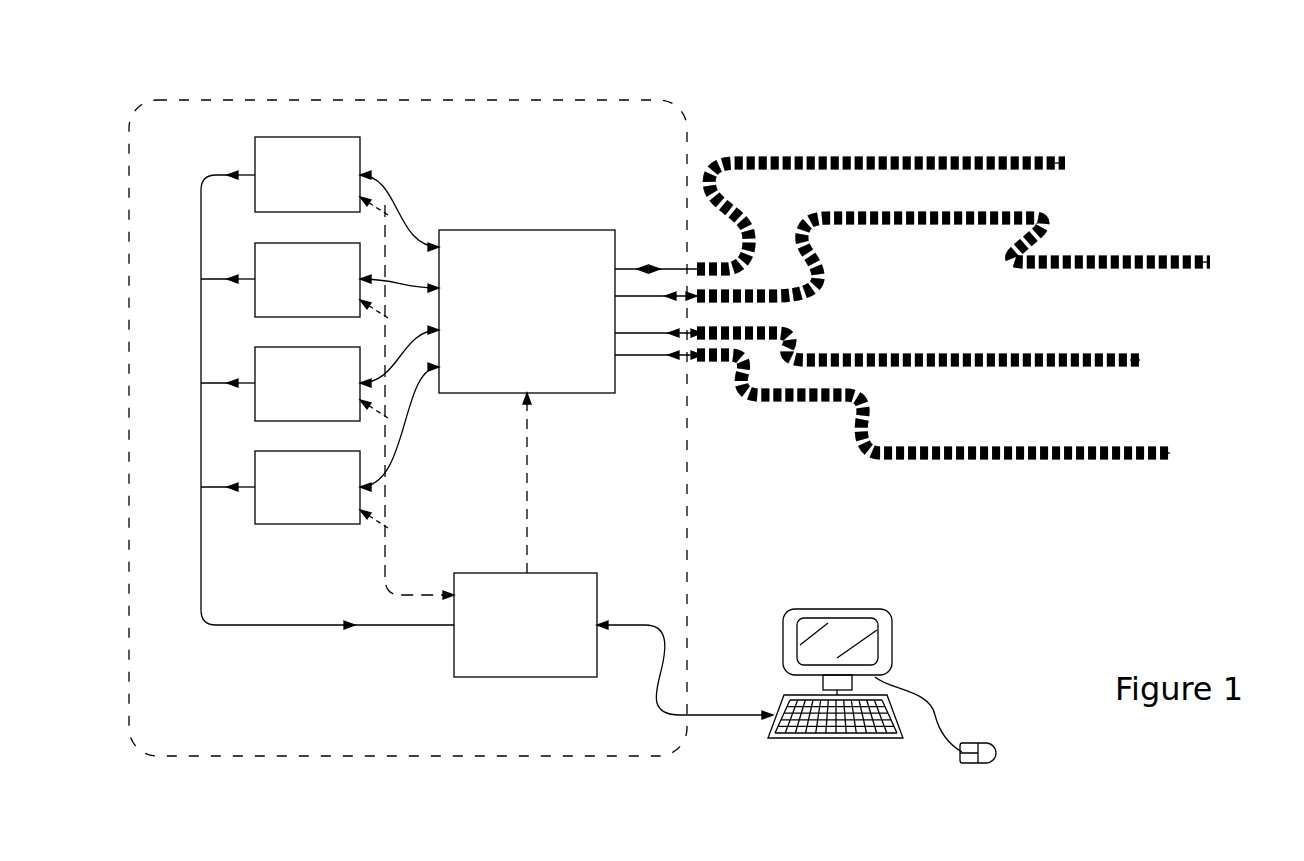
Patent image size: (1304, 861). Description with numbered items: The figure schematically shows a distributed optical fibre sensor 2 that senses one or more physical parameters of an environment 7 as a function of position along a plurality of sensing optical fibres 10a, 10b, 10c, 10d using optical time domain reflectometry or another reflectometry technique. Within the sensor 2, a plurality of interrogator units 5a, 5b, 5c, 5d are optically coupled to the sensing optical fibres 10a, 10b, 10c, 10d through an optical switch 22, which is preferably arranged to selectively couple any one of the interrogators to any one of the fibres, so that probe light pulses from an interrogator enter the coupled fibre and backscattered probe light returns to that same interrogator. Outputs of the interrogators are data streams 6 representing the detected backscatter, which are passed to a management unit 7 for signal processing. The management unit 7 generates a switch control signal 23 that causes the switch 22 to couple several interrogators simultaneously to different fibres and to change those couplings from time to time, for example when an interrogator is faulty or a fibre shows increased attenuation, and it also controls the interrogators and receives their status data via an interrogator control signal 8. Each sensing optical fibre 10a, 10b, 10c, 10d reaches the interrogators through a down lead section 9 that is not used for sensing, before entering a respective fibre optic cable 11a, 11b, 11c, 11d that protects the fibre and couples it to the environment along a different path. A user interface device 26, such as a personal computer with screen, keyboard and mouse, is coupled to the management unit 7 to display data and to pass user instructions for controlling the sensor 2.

The distributed optical fibre sensor 2 is at (560, 100).
The interrogator unit 5a is at (362, 148).
The interrogator unit 5b is at (255, 254).
The interrogator unit 5c is at (255, 363).
The interrogator unit 5d is at (255, 510).
The data streams 6 is at (263, 626).
The management unit 7 is at (568, 572).
The interrogator control signal 8 is at (386, 553).
The down lead section 9 is at (633, 267).
The sensing optical fibre 10a is at (868, 158).
The sensing optical fibre 10b is at (909, 224).
The sensing optical fibre 10c is at (926, 355).
The sensing optical fibre 10d is at (942, 460).
The fibre optic cable 11a is at (1005, 158).
The fibre optic cable 11b is at (1046, 223).
The fibre optic cable 11c is at (1010, 355).
The fibre optic cable 11d is at (1008, 448).
The optical switch 22 is at (545, 229).
The switch control signal 23 is at (528, 458).
The user interface device 26 is at (893, 622).